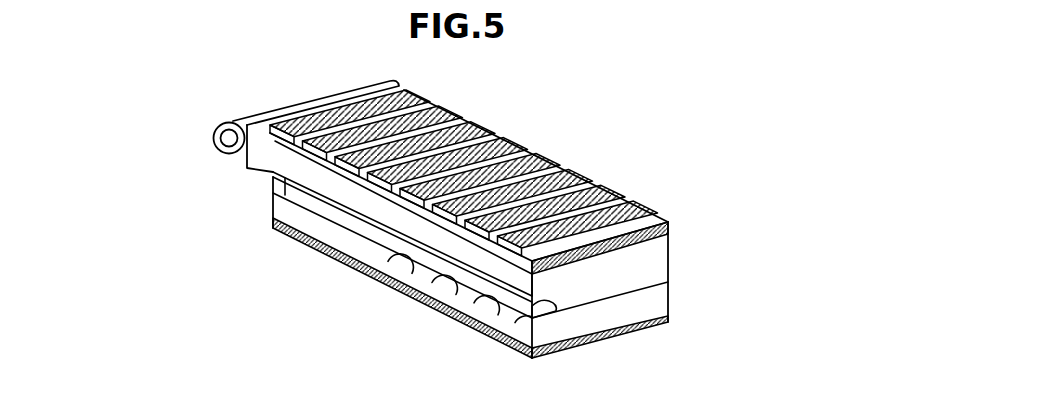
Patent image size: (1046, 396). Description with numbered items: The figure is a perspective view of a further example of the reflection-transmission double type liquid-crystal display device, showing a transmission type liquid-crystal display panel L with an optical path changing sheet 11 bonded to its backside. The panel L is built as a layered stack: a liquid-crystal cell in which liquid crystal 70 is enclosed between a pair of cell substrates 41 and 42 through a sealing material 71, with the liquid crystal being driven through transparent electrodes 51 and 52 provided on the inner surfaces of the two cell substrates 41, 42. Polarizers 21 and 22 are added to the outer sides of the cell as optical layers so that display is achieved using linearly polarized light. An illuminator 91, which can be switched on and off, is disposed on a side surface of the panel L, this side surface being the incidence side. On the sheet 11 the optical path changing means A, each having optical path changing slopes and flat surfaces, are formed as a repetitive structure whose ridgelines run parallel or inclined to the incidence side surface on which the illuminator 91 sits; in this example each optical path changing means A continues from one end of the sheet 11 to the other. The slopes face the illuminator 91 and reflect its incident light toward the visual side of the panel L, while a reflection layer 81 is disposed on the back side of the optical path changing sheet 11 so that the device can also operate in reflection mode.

The optical path changing sheet 11 is at (668, 215).
The optical path changing means A is at (611, 179).
The reflection layer 81 is at (558, 151).
The polarizer 22 is at (669, 230).
The cell substrate 42 is at (665, 254).
The liquid crystal 70 is at (391, 288).
The sealing material 71 is at (661, 283).
The transparent electrode 52 is at (437, 314).
The transparent electrode 51 is at (473, 331).
The cell substrate 41 is at (664, 305).
The polarizer 21 is at (669, 323).
The illuminator 91 is at (254, 118).
The liquid-crystal display panel L is at (301, 288).